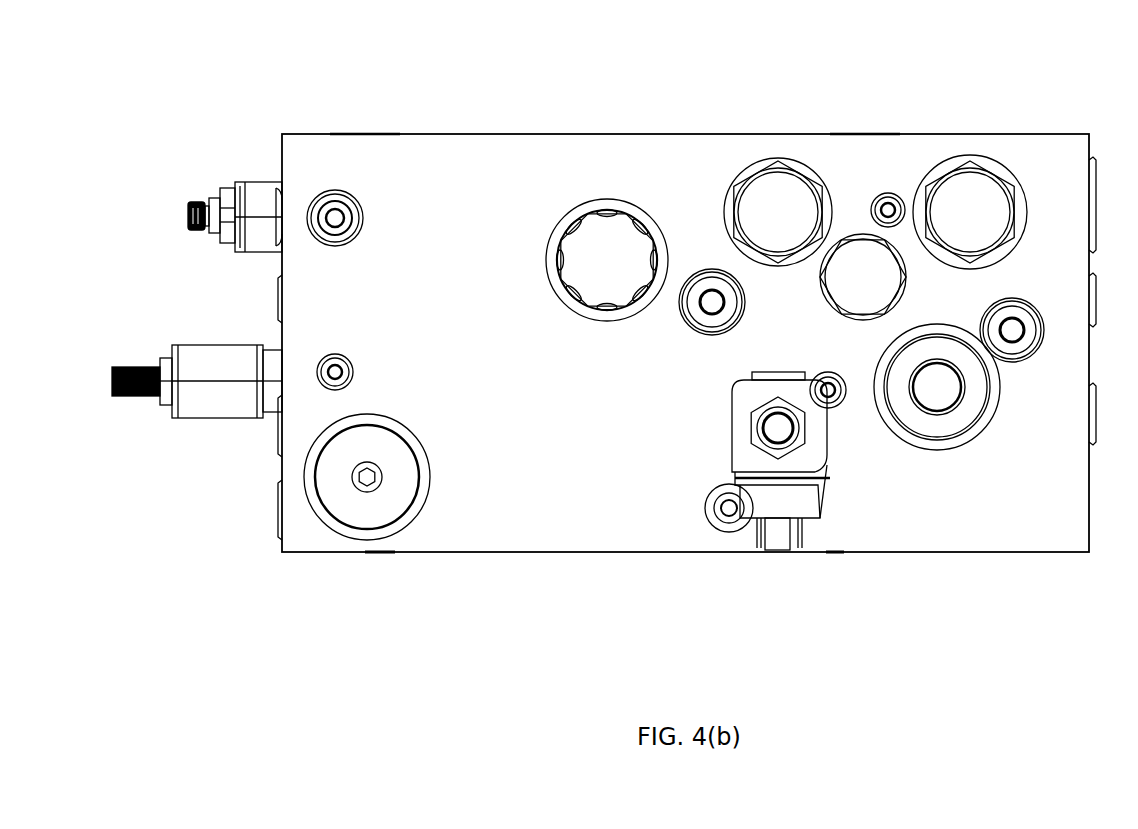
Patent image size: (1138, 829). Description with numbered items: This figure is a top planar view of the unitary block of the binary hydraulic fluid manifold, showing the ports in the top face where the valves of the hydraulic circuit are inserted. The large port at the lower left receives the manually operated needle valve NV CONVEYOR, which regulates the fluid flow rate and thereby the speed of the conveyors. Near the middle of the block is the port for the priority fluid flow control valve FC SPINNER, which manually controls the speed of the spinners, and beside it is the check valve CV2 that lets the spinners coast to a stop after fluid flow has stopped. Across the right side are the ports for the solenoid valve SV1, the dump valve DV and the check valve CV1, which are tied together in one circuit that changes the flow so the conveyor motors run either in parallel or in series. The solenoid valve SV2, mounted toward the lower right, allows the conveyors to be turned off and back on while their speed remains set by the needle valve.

The priority fluid flow control valve FC SPINNER is at (668, 178).
The check valve CV2 is at (826, 150).
The dump valve DV is at (938, 147).
The check valve CV1 is at (1009, 163).
The solenoid valve SV1 is at (995, 476).
The solenoid valve SV2 is at (850, 513).
The needle valve NV CONVEYOR is at (365, 498).